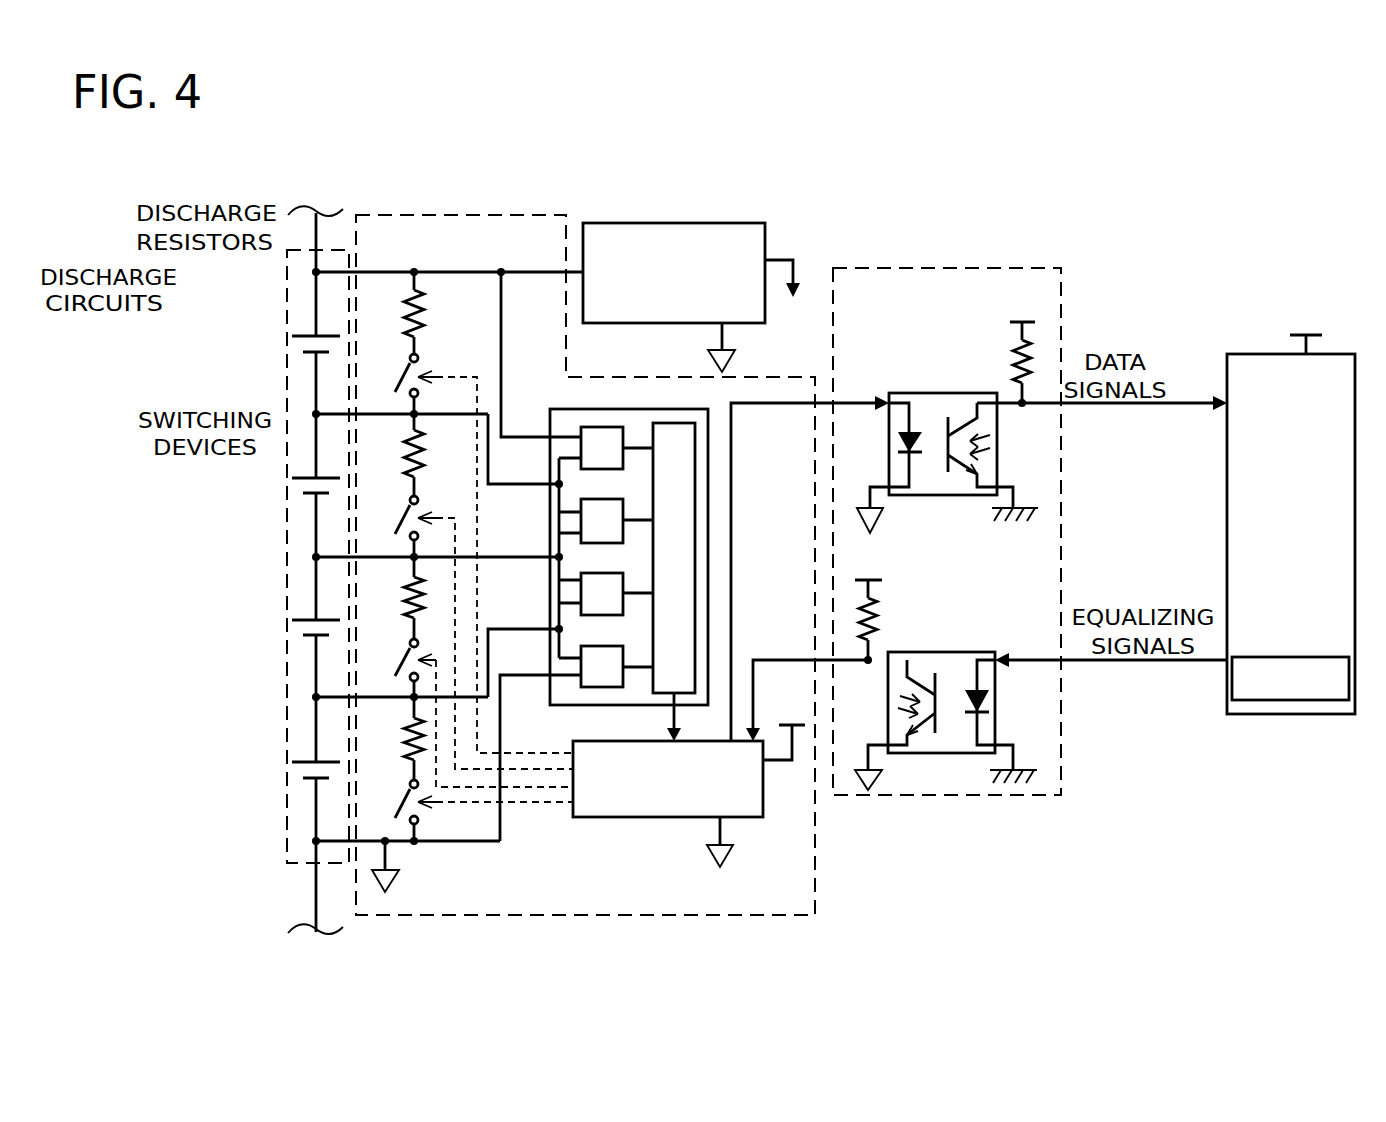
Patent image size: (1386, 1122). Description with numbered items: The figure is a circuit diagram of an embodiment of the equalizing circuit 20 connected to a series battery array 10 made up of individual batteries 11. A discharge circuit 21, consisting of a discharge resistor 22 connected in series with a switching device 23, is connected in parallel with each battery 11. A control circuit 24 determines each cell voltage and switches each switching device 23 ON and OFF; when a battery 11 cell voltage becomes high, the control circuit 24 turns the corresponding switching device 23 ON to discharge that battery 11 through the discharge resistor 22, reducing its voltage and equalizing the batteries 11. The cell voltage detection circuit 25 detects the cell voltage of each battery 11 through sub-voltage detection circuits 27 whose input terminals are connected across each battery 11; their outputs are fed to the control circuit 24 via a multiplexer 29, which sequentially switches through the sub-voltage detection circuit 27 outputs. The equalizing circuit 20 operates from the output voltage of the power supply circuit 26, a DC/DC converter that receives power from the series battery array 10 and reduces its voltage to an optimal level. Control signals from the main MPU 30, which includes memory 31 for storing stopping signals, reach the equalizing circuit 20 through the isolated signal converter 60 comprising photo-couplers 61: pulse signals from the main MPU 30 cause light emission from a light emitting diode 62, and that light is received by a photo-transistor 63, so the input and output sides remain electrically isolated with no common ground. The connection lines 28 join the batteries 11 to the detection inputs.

The series battery array 10 is at (252, 570).
The battery 11 is at (305, 478).
The equalizing circuit 20 is at (815, 857).
The discharge circuit 21 is at (349, 552).
The discharge resistor 22 is at (405, 298).
The switching device 23 is at (400, 380).
The control circuit 24 is at (642, 817).
The cell voltage detection circuit 25 is at (643, 556).
The power supply circuit 26 is at (713, 223).
The sub-voltage detection circuit 27 is at (608, 427).
The voltage detecting lines 28 is at (551, 437).
The multiplexer 29 is at (695, 570).
The main MPU 30 is at (1242, 559).
The memory 31 is at (1288, 700).
The isolated signal converter 60 is at (1030, 562).
The photo-coupler 61 is at (1031, 552).
The light emitting diode 62 is at (909, 447).
The photo-transistor 63 is at (983, 442).